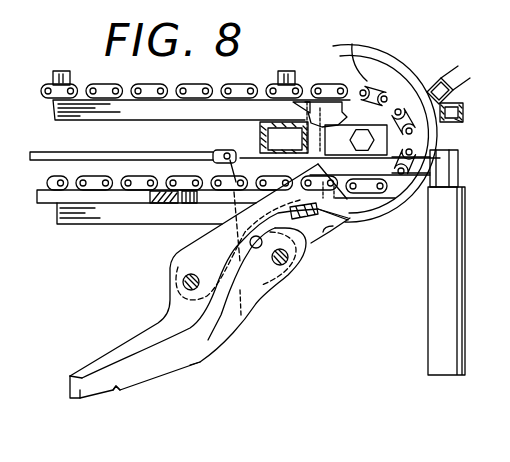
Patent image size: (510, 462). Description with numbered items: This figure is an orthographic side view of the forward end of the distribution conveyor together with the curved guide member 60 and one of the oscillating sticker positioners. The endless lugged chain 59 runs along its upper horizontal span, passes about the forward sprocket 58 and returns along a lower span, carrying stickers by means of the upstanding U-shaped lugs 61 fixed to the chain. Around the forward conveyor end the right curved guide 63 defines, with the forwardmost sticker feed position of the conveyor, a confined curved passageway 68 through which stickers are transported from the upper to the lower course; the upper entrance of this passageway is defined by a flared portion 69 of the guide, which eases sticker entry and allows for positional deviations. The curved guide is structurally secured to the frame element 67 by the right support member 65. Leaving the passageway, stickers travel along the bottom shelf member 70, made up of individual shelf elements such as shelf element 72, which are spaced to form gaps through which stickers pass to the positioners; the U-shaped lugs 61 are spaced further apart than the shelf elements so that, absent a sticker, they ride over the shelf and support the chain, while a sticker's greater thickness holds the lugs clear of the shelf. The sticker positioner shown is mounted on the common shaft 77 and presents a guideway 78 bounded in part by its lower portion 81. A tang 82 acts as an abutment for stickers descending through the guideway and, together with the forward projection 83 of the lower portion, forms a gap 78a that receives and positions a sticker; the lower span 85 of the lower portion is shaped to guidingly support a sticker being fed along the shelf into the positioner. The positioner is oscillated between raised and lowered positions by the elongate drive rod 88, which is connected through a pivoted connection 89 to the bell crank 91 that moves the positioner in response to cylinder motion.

The forward sprocket 58 is at (340, 73).
The lugged chain 59 is at (160, 84).
The curved guide member 60 is at (416, 68).
The U-shaped lug 61 is at (70, 72).
The right curved guide 63 is at (448, 80).
The right support member 65 is at (461, 100).
The frame element 67 is at (456, 122).
The confined curved passageway 68 is at (357, 78).
The flared portion 69 is at (343, 47).
The bottom shelf member 70 is at (131, 222).
The shelf element 72 is at (107, 212).
The common shaft 77 is at (132, 350).
The guideway 78 is at (224, 323).
The gap 78a is at (107, 380).
The lower portion 81 is at (196, 360).
The tang 82 is at (68, 390).
The forward projection 83 is at (117, 389).
The lower span 85 is at (338, 228).
The drive rod 88 is at (95, 153).
The pivoted connection 89 is at (226, 151).
The bell crank 91 is at (234, 168).